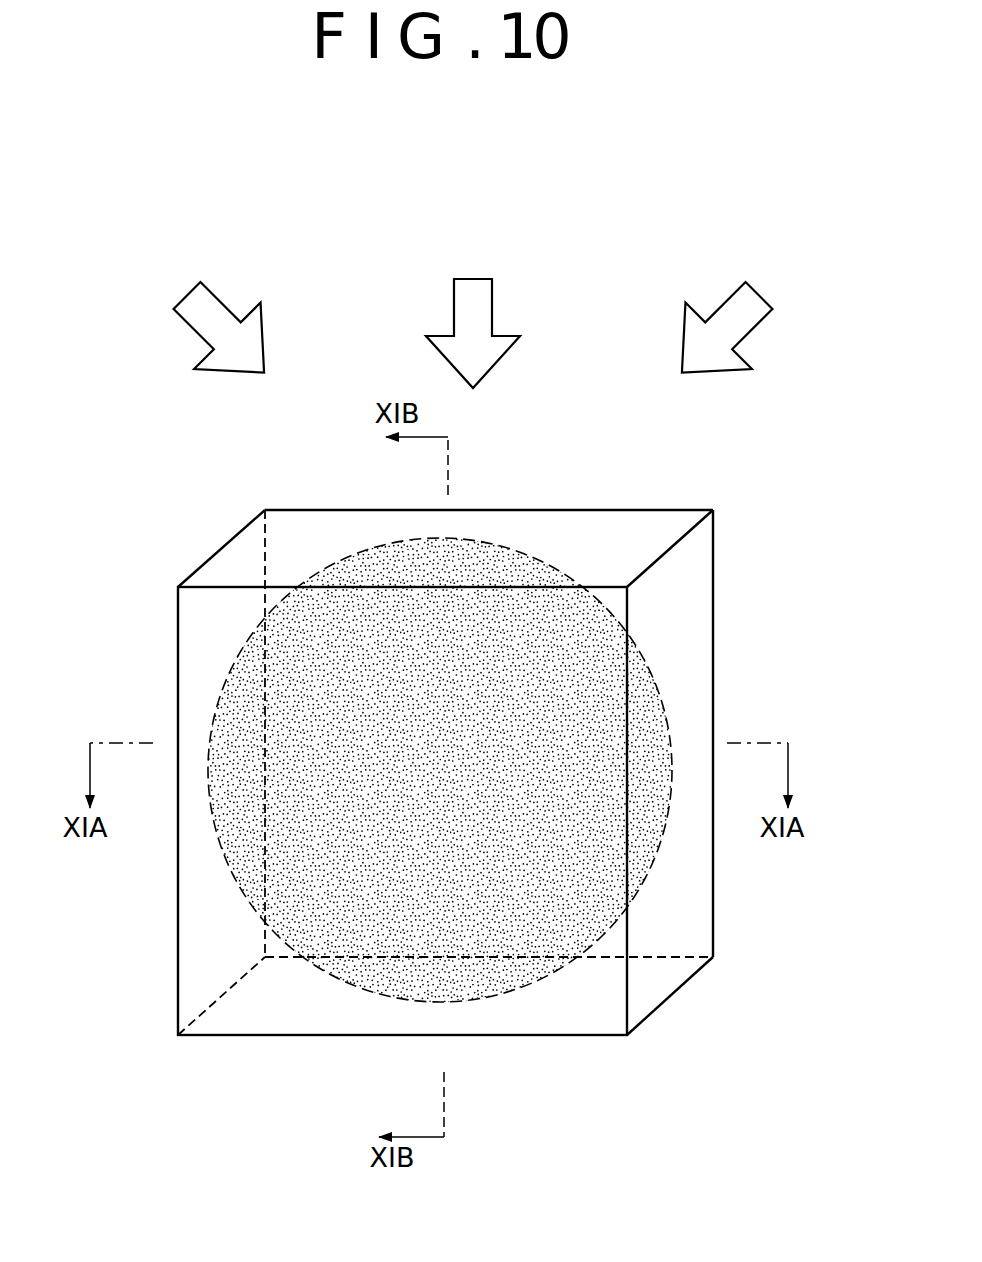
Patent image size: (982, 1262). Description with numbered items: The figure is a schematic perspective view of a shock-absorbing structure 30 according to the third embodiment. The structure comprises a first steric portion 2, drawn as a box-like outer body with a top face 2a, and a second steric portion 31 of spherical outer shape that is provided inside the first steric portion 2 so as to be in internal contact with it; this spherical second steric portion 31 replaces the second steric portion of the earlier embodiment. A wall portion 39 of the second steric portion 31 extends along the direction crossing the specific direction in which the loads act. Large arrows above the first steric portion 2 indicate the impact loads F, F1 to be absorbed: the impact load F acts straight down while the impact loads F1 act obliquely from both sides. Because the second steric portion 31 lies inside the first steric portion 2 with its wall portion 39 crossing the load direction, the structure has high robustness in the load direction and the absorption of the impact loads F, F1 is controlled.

The first steric portion 2 is at (487, 732).
The top surface of block 2a is at (330, 527).
The shock-absorbing structure 30 is at (137, 441).
The second steric portion 31 is at (243, 642).
The wall portion 39 is at (218, 702).
The impact load F is at (453, 287).
The impact load F1 is at (222, 302).